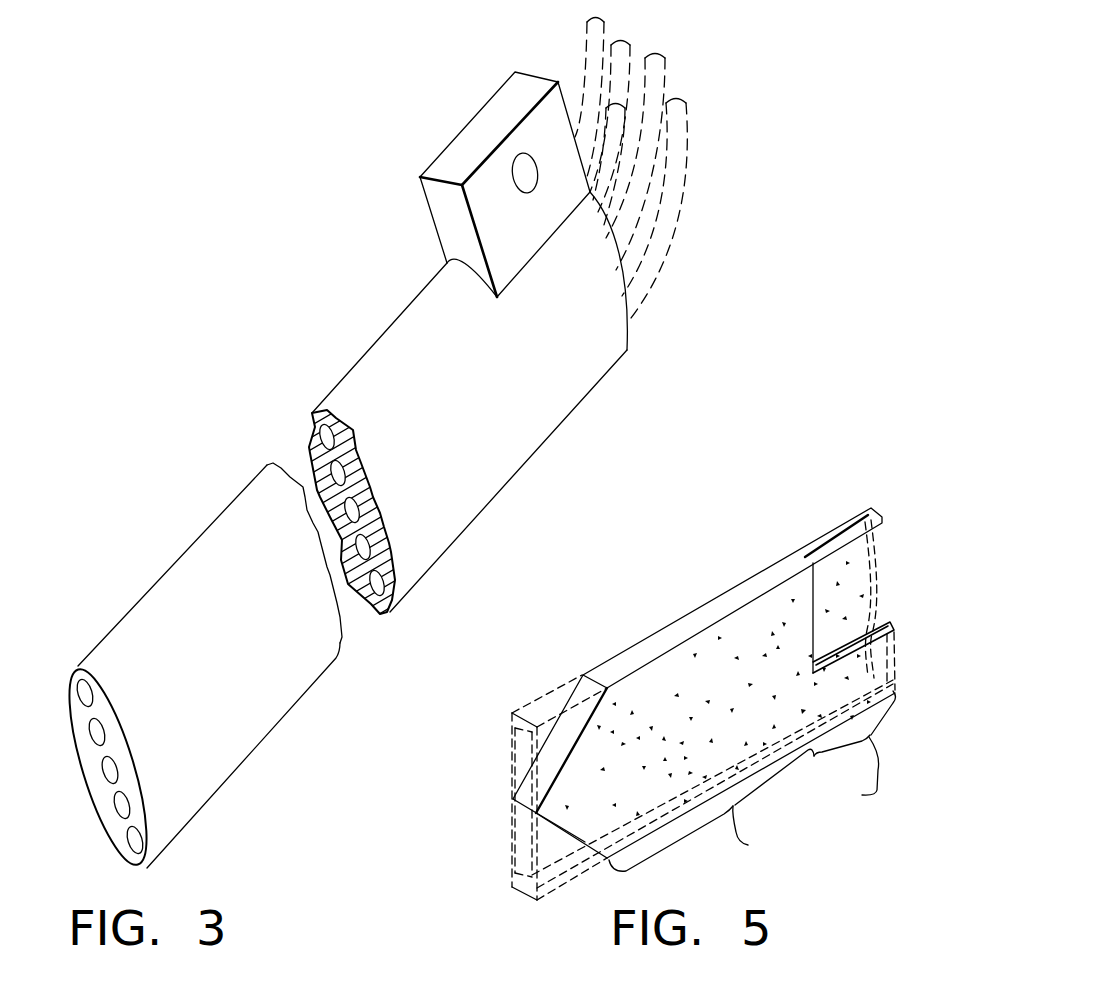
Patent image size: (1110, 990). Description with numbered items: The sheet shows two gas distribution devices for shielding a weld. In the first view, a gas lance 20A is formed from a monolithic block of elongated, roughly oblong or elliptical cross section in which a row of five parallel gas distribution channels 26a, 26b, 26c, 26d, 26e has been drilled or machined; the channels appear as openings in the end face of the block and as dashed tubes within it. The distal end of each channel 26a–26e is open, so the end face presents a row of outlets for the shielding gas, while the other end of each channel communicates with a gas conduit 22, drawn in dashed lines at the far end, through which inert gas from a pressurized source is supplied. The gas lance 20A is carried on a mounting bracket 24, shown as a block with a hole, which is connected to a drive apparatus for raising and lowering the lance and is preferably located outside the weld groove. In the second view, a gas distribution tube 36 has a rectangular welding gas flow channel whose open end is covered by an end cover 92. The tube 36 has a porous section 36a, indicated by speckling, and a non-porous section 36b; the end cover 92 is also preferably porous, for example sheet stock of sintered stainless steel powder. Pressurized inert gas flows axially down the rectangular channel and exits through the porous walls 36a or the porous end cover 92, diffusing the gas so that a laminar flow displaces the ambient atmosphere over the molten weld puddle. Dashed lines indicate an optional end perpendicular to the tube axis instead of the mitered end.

In FIG. 3, the gas lance 20A is at (212, 518).
In FIG. 3, the gas conduit 22 is at (683, 200).
In FIG. 3, the mounting bracket 24 is at (482, 120).
In FIG. 3, the gas distribution channel 26a is at (110, 770).
In FIG. 3, the gas distribution channel 26b is at (85, 693).
In FIG. 3, the gas distribution channel 26c is at (97, 732).
In FIG. 3, the gas distribution channel 26d is at (122, 805).
In FIG. 3, the gas distribution channel 26e is at (135, 840).
In FIG. 5, the gas distribution tube 36 is at (817, 543).
In FIG. 5, the porous section 36a is at (711, 810).
In FIG. 5, the non-porous section 36b is at (855, 749).
In FIG. 5, the end cover 92 is at (557, 738).